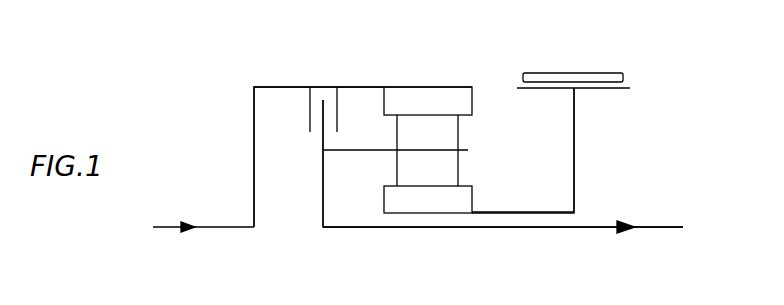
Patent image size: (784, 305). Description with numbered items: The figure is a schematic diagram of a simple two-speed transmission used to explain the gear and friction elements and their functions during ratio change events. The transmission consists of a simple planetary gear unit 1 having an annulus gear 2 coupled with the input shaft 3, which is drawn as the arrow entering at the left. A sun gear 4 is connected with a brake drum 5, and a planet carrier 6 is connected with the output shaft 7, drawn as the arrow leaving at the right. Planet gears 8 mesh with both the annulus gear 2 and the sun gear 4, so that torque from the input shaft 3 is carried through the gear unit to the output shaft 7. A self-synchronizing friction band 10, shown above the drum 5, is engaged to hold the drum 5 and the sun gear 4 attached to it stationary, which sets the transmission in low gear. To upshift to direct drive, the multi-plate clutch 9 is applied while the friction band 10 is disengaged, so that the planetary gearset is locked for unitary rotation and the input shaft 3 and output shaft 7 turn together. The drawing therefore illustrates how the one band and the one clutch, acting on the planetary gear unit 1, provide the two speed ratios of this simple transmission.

The simple planetary gear unit 1 is at (494, 193).
The annulus gear 2 is at (427, 100).
The input shaft 3 is at (205, 223).
The sun gear 4 is at (427, 203).
The brake drum 5 is at (630, 88).
The planet carrier 6 is at (360, 150).
The output shaft 7 is at (653, 227).
The planet gears 8 is at (438, 136).
The multi-plate clutch 9 is at (312, 113).
The self-synchronizing friction band 10 is at (593, 73).